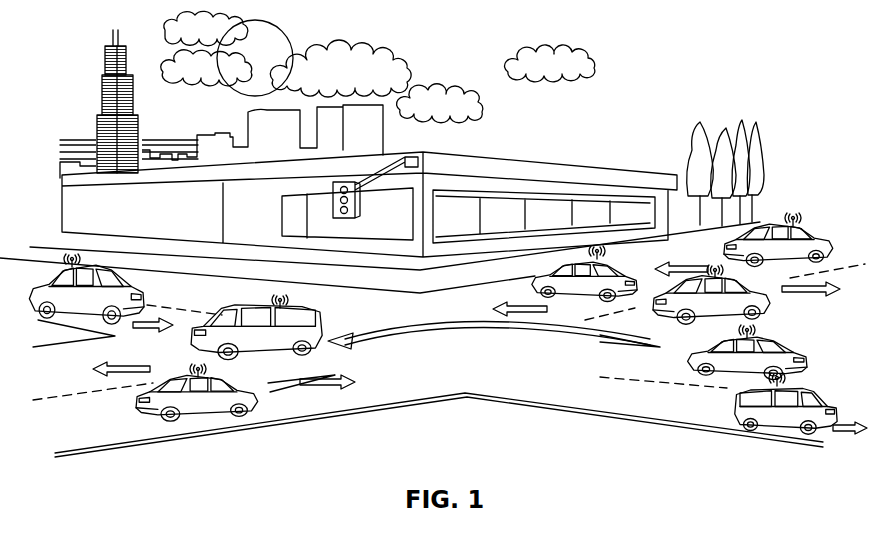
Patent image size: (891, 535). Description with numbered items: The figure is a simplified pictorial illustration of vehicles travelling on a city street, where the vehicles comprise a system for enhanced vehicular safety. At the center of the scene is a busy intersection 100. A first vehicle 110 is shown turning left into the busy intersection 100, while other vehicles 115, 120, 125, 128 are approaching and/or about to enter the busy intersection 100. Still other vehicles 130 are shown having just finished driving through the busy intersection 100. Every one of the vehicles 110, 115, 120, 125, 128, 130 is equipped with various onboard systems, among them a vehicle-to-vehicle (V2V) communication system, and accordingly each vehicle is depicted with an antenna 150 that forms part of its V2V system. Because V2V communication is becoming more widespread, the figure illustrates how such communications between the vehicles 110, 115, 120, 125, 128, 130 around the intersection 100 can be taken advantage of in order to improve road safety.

The busy intersection 100 is at (471, 423).
The first vehicle 110 is at (818, 350).
The vehicle 115 is at (580, 297).
The vehicle 120 is at (116, 283).
The vehicle 125 is at (150, 407).
The vehicle 128 is at (830, 235).
The vehicle 130 is at (246, 309).
The antenna 150 is at (68, 256).